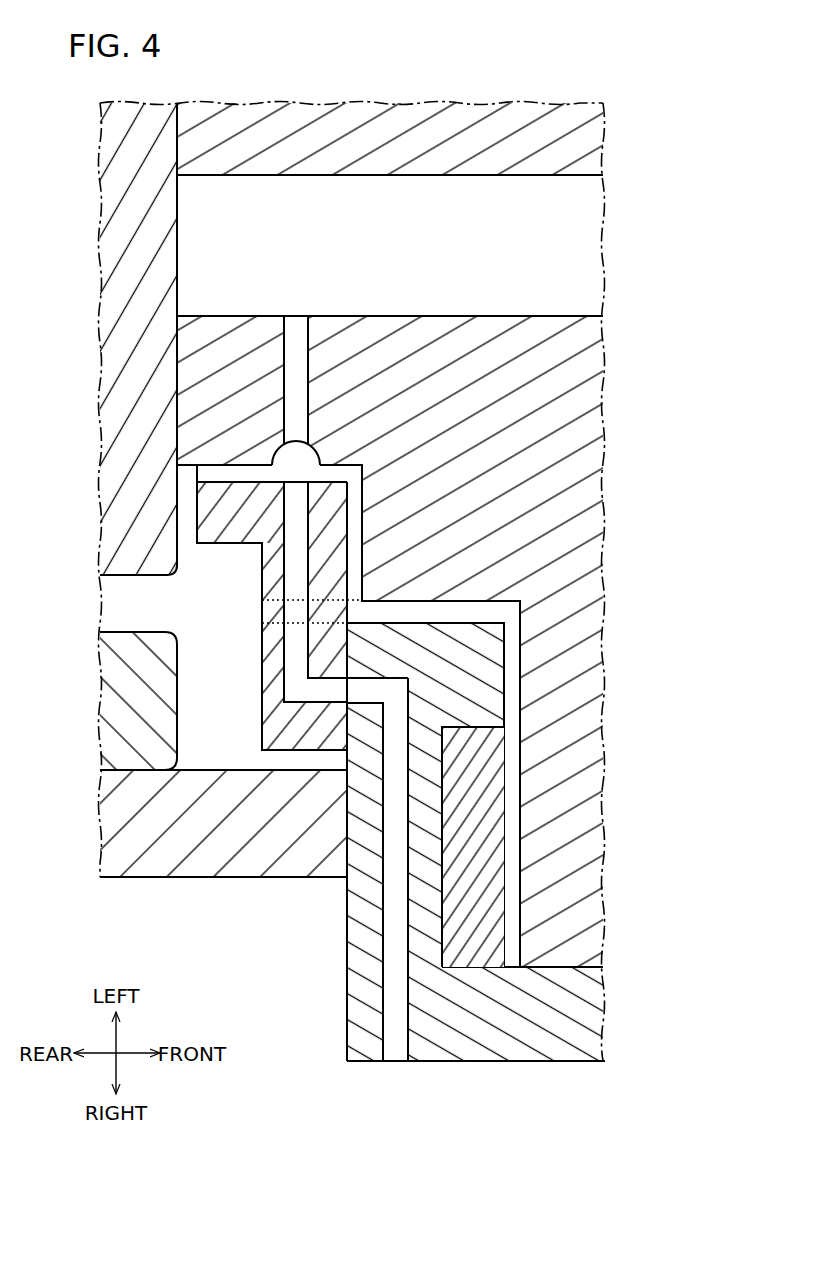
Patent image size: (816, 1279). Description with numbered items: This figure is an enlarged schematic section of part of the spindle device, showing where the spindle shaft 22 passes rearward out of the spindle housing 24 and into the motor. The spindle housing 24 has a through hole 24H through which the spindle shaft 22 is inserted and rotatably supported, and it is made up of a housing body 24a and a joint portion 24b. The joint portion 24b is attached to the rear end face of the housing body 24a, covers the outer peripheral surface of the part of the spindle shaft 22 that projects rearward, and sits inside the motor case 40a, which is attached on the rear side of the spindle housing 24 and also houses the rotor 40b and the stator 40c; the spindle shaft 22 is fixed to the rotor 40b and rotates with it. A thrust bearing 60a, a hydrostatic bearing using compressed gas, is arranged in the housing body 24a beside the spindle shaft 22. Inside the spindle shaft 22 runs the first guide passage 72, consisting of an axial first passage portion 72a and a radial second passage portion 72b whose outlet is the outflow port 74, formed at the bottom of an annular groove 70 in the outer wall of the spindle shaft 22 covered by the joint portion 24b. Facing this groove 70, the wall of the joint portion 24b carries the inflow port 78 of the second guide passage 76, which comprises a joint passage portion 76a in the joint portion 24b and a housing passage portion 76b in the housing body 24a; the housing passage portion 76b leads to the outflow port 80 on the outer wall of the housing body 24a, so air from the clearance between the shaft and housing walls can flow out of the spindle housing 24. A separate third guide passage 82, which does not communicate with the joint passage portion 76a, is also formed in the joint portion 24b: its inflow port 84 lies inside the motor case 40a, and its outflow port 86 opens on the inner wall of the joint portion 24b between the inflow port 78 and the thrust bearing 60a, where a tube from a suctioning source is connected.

The spindle shaft 22 is at (575, 563).
The spindle housing 24 is at (666, 665).
The housing body 24a is at (598, 992).
The joint portion 24b is at (323, 657).
The through hole 24H is at (206, 473).
The motor case 40a is at (117, 822).
The rotor 40b is at (117, 306).
The stator 40c is at (117, 678).
The thrust bearing 60a is at (461, 945).
The groove 70 is at (356, 460).
The first guide passage 72 is at (669, 256).
The first passage portion 72a is at (574, 268).
The second passage portion 72b is at (300, 372).
The outflow port 74 is at (356, 459).
The second guide passage 76 is at (271, 897).
The joint passage portion 76a is at (297, 488).
The housing passage portion 76b is at (405, 953).
The inflow port 78 is at (292, 512).
The outflow port 80 is at (395, 1062).
The third guide passage 82 is at (272, 600).
The inflow port 84 is at (257, 612).
The outflow port 86 is at (358, 613).